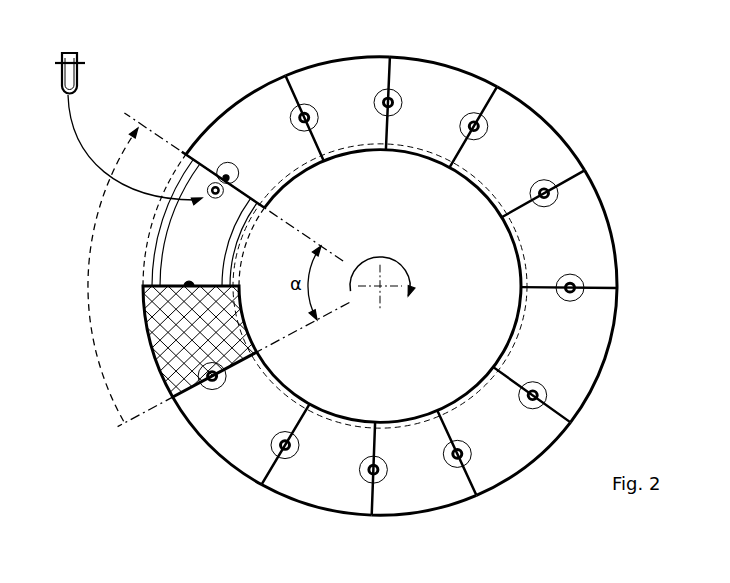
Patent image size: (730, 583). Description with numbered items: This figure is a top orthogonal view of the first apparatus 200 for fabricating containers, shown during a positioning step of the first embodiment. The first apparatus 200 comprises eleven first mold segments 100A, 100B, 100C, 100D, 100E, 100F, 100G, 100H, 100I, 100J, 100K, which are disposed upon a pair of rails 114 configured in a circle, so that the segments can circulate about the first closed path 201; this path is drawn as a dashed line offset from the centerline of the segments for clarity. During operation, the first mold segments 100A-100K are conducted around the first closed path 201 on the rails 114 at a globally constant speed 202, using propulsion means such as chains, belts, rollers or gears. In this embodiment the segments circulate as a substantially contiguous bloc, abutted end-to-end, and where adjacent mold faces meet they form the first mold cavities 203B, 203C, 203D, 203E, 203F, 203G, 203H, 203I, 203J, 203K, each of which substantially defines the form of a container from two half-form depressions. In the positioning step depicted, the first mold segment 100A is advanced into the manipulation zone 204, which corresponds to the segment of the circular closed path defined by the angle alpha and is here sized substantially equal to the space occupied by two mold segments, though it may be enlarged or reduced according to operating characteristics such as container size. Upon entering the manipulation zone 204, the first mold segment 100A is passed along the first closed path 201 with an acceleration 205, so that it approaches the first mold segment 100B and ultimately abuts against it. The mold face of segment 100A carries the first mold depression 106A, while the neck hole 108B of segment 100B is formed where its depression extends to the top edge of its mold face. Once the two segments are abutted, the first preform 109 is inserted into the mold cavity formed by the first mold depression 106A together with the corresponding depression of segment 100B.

The first apparatus 200 is at (565, 50).
The first closed path 201 is at (524, 330).
The globally constant speed 202 is at (410, 276).
The manipulation zone 204 is at (120, 426).
The acceleration 205 is at (100, 362).
The first mold segment 100A is at (142, 326).
The first mold segment 100B is at (229, 111).
The first mold segment 100C is at (368, 56).
The first mold segment 100D is at (480, 72).
The first mold segment 100E is at (565, 140).
The first mold segment 100F is at (606, 240).
The first mold segment 100G is at (596, 352).
The first mold segment 100H is at (528, 466).
The first mold segment 100I is at (431, 500).
The first mold segment 100J is at (330, 505).
The first mold segment 100K is at (234, 446).
The first mold cavity 203B is at (305, 98).
The first mold cavity 203C is at (390, 96).
The first mold cavity 203D is at (488, 118).
The first mold cavity 203E is at (558, 190).
The first mold cavity 203F is at (586, 288).
The first mold cavity 203G is at (550, 394).
The first mold cavity 203H is at (472, 464).
The first mold cavity 203I is at (375, 486).
The first mold cavity 203J is at (283, 462).
The first mold cavity 203K is at (212, 390).
The first mold depression 106A is at (189, 284).
The neck hole 108B is at (219, 165).
The rails 114 is at (243, 207).
The first preform 109 is at (78, 53).